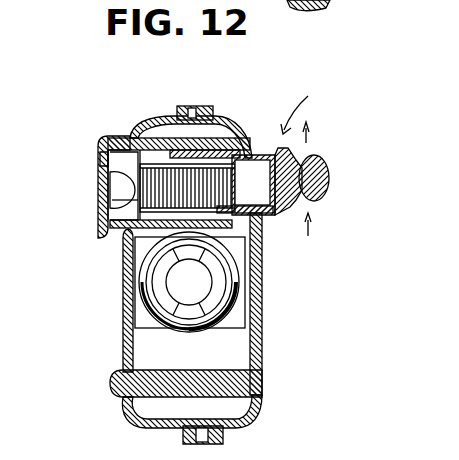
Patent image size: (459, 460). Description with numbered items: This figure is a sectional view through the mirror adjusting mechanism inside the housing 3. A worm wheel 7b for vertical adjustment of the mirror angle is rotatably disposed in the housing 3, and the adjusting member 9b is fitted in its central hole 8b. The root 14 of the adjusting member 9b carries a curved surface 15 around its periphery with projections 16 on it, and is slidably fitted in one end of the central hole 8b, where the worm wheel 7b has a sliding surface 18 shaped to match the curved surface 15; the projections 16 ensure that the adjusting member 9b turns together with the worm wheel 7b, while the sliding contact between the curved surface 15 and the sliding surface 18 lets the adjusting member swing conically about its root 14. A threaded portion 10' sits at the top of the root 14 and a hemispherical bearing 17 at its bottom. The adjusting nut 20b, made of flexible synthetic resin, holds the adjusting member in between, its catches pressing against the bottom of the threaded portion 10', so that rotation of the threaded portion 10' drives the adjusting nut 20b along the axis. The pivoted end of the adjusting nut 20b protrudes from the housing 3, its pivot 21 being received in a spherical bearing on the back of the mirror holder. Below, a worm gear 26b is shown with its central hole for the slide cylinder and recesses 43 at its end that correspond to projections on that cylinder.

The housing 3 is at (122, 343).
The worm wheel 7b is at (152, 138).
The central hole 8b is at (223, 150).
The adjusting member 9b is at (306, 112).
The threaded portion 10' is at (247, 156).
The root 14 is at (107, 162).
The curved surface 15 is at (100, 144).
The projections 16 is at (109, 148).
The hemispherical bearing 17 is at (103, 192).
The sliding surface 18 is at (128, 152).
The adjusting nut 20b is at (263, 212).
The pivot 21 is at (331, 176).
The worm gear 26b is at (244, 291).
The recesses 43 is at (180, 262).